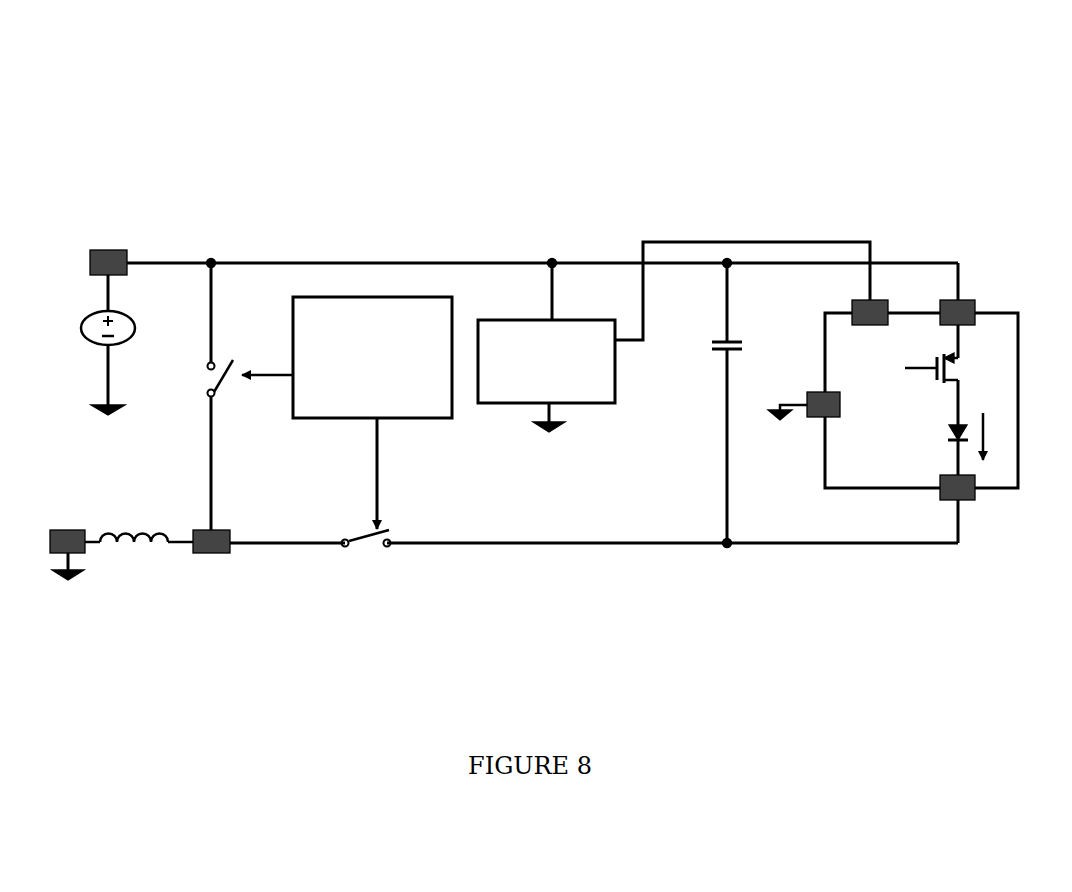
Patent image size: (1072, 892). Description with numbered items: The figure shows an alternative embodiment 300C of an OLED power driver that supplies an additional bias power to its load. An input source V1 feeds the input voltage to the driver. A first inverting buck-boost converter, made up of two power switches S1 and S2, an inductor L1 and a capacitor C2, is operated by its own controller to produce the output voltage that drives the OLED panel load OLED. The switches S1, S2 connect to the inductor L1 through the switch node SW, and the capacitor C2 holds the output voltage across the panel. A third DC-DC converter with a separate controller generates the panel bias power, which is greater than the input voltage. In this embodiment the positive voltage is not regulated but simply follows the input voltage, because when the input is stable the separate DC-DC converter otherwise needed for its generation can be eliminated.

The power driver embodiment 300C is at (530, 323).
The input voltage source V1 is at (90, 345).
The power switch S1 is at (229, 395).
The power switch S2 is at (366, 555).
The capacitor C2 is at (708, 403).
The inductor L1 is at (139, 558).
The switch node pad SW is at (211, 556).
The OLED panel load OLED is at (895, 381).